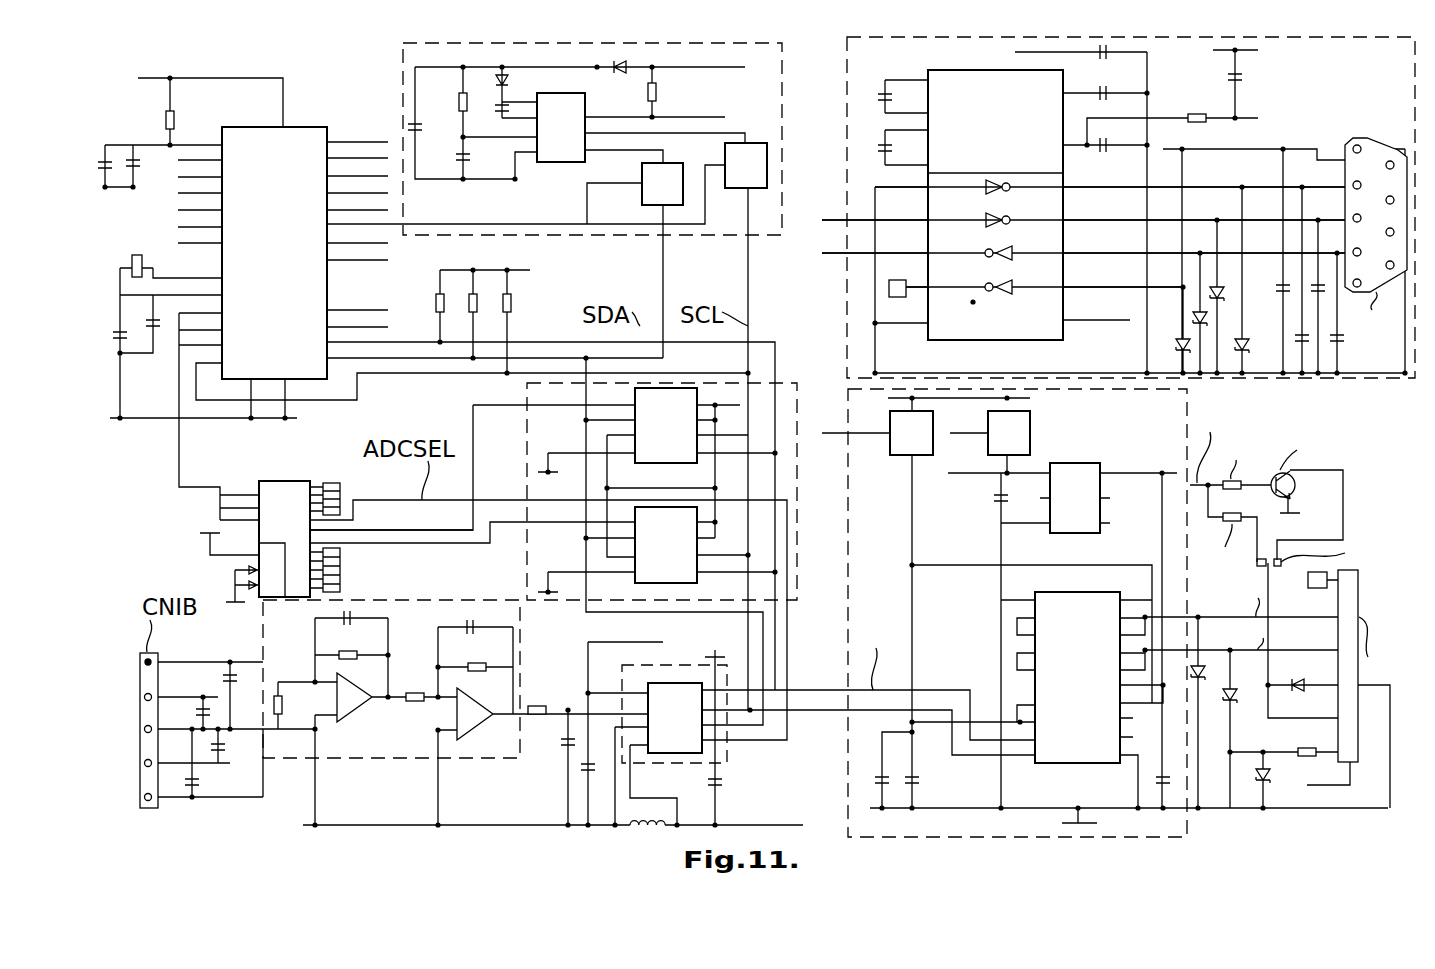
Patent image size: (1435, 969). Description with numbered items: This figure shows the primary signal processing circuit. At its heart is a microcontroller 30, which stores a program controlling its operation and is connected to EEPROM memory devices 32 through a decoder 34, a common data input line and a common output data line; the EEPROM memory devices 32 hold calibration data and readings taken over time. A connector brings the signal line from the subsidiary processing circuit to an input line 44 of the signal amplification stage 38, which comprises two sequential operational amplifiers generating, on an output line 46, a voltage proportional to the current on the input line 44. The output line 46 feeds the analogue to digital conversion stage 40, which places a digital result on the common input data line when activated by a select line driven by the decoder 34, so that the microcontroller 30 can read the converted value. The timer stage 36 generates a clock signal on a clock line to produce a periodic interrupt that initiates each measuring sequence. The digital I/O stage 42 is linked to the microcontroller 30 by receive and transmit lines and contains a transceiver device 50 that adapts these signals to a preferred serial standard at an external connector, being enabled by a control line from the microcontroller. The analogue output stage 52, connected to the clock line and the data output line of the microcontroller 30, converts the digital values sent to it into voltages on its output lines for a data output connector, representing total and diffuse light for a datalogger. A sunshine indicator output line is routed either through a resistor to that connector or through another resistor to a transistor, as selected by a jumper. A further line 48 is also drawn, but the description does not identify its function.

The microcontroller 30 is at (312, 127).
The EEPROM memory devices 32 is at (797, 390).
The decoder 34 is at (285, 481).
The timer stage 36 is at (782, 90).
The signal amplification stage 38 is at (455, 712).
The analogue to digital conversion stage 40 is at (680, 665).
The digital I/O stage 42 is at (1118, 229).
The input line 44 is at (283, 680).
The output line 46 is at (553, 705).
The signal line 48 is at (765, 670).
The transceiver device 50 is at (948, 69).
The analogue output stage 52 is at (1187, 826).